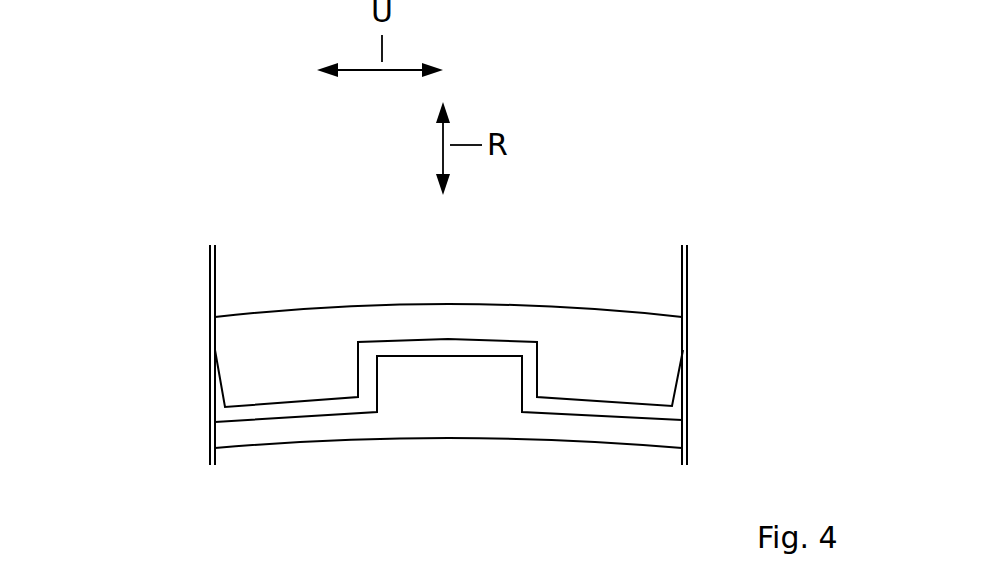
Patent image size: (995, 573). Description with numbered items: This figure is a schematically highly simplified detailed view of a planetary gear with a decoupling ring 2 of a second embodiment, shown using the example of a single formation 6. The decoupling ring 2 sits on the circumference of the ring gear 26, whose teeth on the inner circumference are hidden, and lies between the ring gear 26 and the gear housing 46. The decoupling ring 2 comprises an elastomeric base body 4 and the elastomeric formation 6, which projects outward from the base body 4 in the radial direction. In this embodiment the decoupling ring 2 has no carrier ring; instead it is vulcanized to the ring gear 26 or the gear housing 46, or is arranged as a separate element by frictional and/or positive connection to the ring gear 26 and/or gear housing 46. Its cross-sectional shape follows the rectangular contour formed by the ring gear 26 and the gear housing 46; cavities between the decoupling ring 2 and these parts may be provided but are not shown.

The decoupling ring 2 is at (700, 410).
The elastomeric base body 4 is at (604, 402).
The elastomeric formation 6 is at (482, 340).
The ring gear 26 is at (675, 438).
The gear housing 46 is at (675, 333).